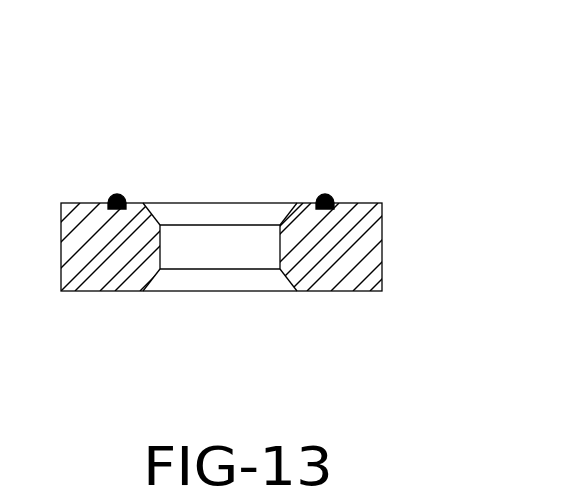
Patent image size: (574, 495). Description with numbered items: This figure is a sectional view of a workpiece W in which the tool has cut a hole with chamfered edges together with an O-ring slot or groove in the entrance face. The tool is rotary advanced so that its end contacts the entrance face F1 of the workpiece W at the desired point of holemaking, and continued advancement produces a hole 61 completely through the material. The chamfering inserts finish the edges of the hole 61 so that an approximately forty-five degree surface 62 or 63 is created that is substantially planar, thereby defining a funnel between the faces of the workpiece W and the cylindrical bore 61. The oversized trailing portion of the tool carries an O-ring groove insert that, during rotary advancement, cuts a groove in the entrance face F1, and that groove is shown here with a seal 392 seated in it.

The entrance face F1 is at (81, 194).
The seal 392 is at (115, 193).
The surface 63 is at (158, 211).
The workpiece W is at (380, 248).
The surface 62 is at (155, 275).
The hole 61 is at (248, 257).